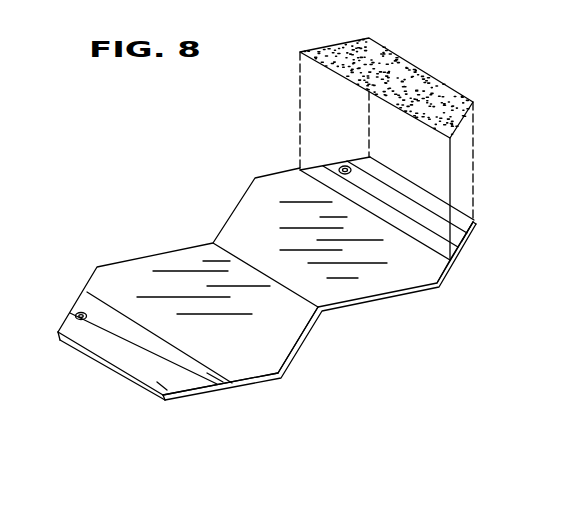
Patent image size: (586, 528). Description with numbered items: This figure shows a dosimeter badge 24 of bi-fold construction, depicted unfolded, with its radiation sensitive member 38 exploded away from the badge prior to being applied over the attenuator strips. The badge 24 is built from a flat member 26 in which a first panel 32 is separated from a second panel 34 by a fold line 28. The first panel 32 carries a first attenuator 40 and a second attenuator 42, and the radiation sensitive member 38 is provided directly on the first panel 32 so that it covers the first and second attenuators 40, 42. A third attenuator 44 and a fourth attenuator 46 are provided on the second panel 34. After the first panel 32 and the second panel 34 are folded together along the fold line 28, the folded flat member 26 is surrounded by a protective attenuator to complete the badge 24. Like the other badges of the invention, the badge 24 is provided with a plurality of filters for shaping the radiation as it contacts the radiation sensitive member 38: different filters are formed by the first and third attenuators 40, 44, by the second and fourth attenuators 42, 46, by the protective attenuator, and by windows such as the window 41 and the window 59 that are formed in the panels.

The badge 24 is at (341, 326).
The folded flat member 26 is at (462, 259).
The fold line 28 is at (230, 252).
The first panel 32 is at (400, 277).
The second panel 34 is at (273, 358).
The radiation sensitive member 38 is at (441, 98).
The first attenuator 40 is at (476, 224).
The window 41 is at (75, 309).
The second attenuator 42 is at (447, 243).
The third attenuator 44 is at (176, 398).
The fourth attenuator 46 is at (232, 382).
The window 59 is at (344, 166).